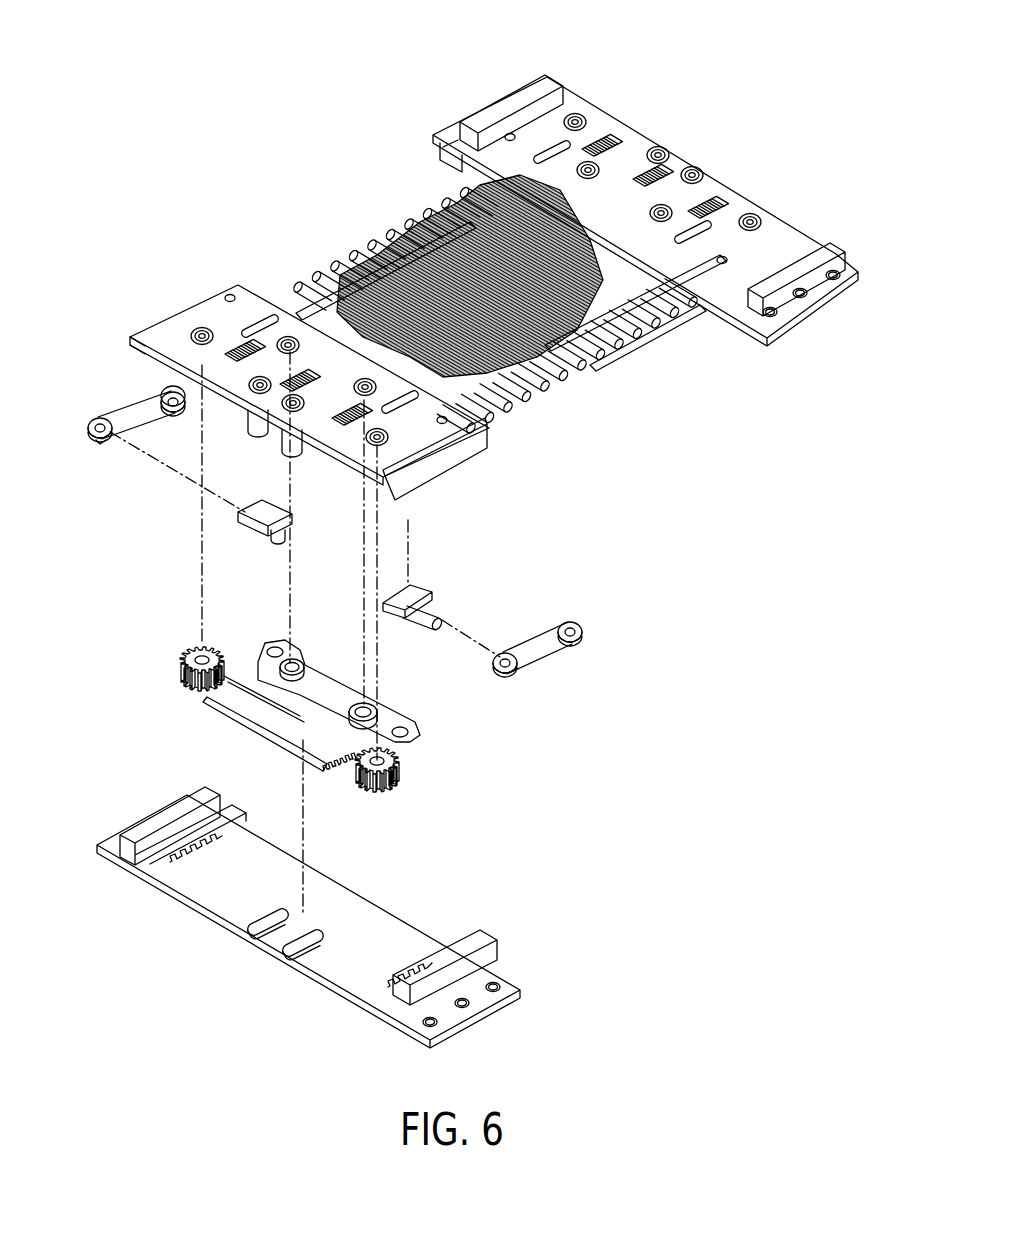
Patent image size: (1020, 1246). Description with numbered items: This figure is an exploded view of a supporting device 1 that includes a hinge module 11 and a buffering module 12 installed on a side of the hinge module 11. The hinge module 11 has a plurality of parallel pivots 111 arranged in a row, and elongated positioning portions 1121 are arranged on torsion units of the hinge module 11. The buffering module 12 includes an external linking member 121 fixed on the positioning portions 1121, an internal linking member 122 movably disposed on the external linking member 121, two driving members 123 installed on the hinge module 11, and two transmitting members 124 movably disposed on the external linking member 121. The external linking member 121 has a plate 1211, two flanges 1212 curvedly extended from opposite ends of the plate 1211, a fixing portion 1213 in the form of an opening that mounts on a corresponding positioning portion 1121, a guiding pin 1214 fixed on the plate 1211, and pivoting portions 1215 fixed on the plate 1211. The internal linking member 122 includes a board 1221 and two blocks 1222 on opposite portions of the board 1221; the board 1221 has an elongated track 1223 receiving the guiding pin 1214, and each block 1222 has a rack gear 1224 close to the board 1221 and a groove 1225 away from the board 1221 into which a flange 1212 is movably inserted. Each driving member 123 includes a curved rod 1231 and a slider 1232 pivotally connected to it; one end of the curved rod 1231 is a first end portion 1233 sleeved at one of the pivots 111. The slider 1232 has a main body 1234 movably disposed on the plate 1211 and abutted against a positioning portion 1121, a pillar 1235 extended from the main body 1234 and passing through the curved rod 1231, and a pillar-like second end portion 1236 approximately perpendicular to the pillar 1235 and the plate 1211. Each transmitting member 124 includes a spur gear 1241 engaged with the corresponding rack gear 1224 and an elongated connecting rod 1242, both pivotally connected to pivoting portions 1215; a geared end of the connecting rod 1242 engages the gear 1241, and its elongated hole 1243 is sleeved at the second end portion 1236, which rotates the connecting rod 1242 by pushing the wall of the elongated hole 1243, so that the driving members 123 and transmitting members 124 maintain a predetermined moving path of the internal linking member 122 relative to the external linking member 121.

The supporting device 1 is at (57, 93).
The hinge module 11 is at (509, 309).
The pivots 111 is at (572, 376).
The buffering module 12 is at (645, 188).
The positioning portions 1121 is at (706, 195).
The external linking member 121 is at (298, 403).
The plate 1211 is at (415, 445).
The flanges 1212 is at (136, 330).
The fixing portion 1213 is at (352, 422).
The guiding pin 1214 is at (292, 440).
The pivoting portions 1215 is at (288, 337).
The internal linking member 122 is at (308, 917).
The board 1221 is at (270, 862).
The blocks 1222 is at (403, 1014).
The track 1223 is at (303, 953).
The rack gear 1224 is at (200, 870).
The groove 1225 is at (135, 855).
The driving member 123 is at (390, 539).
The curved rod 1231 is at (103, 442).
The slider 1232 is at (242, 527).
The first end portion 1233 is at (168, 397).
The main body 1234 is at (412, 540).
The pillar 1235 is at (432, 600).
The second end portion 1236 is at (291, 582).
The transmitting member 124 is at (319, 746).
The gear 1241 is at (405, 789).
The connecting rod 1242 is at (333, 784).
The elongated hole 1243 is at (285, 653).